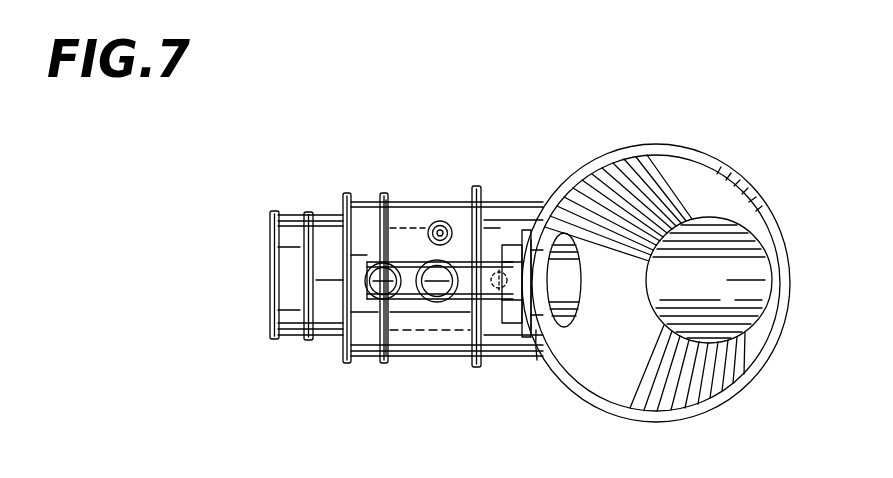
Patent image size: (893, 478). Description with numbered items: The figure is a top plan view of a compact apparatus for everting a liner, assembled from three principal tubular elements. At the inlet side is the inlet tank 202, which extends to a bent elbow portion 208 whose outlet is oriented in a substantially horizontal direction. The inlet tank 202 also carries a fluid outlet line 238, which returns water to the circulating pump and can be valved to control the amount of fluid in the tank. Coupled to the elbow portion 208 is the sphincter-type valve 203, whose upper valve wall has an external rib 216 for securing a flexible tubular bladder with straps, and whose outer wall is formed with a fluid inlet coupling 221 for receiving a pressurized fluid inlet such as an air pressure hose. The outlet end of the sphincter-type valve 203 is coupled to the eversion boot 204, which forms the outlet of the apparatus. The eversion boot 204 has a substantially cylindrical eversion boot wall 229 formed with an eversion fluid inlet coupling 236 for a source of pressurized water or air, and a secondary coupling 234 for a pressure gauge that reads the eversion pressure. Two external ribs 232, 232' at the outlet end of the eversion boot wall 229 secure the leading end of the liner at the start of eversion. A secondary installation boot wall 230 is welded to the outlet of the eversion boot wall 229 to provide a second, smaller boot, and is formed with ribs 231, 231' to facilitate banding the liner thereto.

The inlet tank 202 is at (703, 151).
The sphincter-type valve 203 is at (518, 368).
The eversion boot 204 is at (415, 362).
The elbow portion 208 is at (709, 280).
The external rib 216 is at (538, 363).
The fluid inlet coupling 221 is at (521, 196).
The eversion boot wall 229 is at (402, 203).
The secondary installation boot wall 230 is at (330, 252).
The rib 231 is at (268, 324).
The rib 231' is at (244, 301).
The external rib 232 is at (351, 335).
The external rib 232' is at (298, 335).
The secondary coupling 234 is at (451, 223).
The eversion fluid inlet coupling 236 is at (369, 203).
The fluid outlet line 238 is at (440, 303).